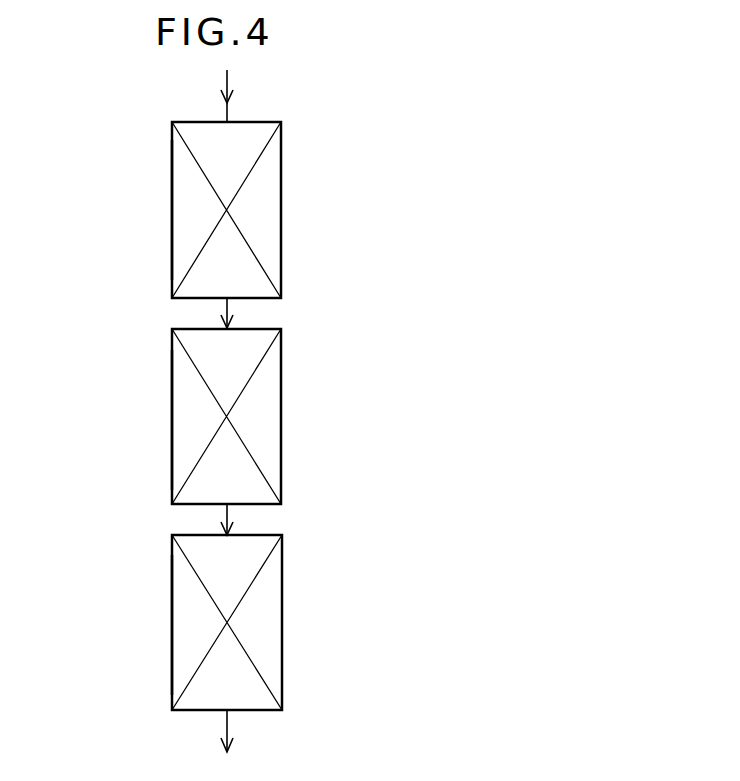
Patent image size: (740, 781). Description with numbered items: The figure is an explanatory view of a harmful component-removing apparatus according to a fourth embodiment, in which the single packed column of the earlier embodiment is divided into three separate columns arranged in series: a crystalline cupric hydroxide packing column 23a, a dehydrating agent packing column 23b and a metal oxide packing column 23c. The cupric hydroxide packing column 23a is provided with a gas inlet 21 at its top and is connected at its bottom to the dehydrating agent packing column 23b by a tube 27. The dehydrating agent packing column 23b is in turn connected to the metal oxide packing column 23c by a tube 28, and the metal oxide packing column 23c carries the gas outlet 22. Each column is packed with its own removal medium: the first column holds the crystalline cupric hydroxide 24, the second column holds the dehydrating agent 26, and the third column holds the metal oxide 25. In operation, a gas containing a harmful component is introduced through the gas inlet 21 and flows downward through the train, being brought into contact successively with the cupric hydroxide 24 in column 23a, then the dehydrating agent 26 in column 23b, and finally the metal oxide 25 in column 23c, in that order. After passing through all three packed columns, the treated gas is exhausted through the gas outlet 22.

The gas inlet 21 is at (228, 107).
The gas outlet 22 is at (229, 722).
The crystalline cupric hydroxide packing column 23a is at (172, 195).
The dehydrating agent packing column 23b is at (172, 427).
The metal oxide packing column 23c is at (172, 620).
The cupric hydroxide 24 is at (258, 197).
The metal oxide 25 is at (270, 613).
The dehydrating agent 26 is at (268, 422).
The tube 27 is at (229, 305).
The tube 28 is at (229, 510).